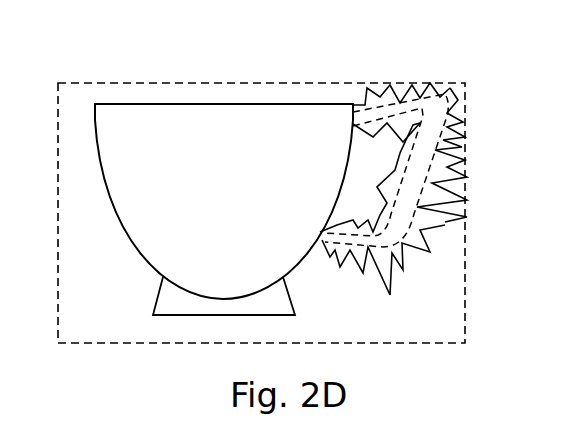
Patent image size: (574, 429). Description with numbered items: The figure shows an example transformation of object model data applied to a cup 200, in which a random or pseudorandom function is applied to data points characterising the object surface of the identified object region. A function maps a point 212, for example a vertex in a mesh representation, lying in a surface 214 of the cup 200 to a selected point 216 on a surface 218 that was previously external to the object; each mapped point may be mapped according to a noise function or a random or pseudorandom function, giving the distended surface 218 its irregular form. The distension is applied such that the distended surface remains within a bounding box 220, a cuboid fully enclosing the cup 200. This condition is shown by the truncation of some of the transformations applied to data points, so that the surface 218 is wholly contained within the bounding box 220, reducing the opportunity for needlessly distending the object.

The cup 200 is at (88, 59).
The point 212 is at (433, 146).
The surface 214 is at (445, 104).
The selected point 216 is at (429, 153).
The surface 218 is at (444, 222).
The bounding box 220 is at (338, 84).